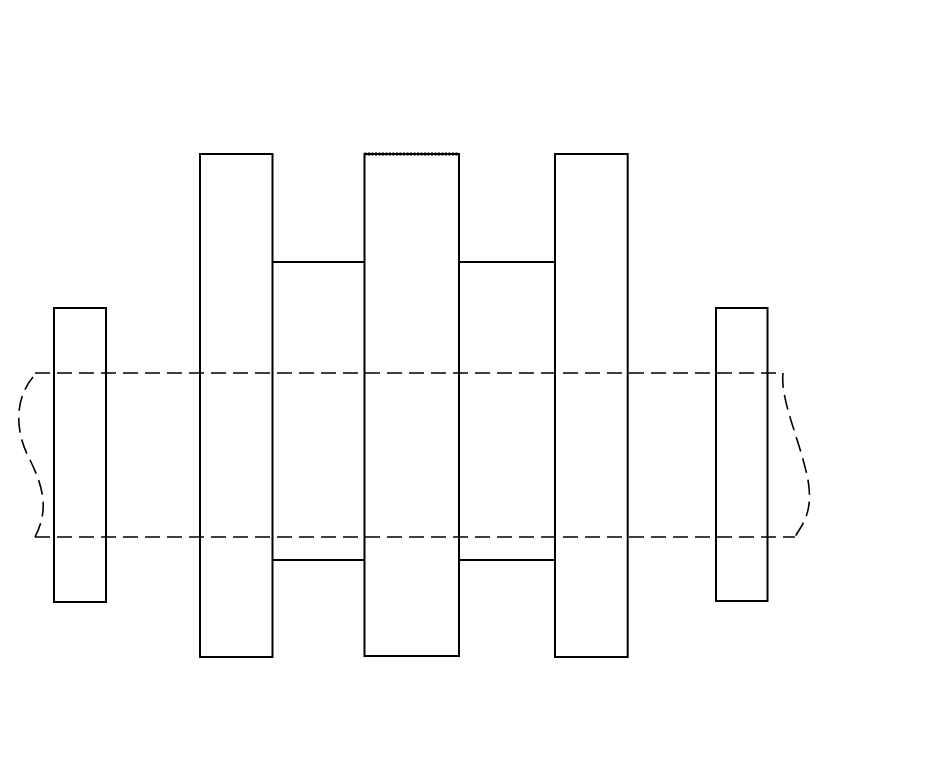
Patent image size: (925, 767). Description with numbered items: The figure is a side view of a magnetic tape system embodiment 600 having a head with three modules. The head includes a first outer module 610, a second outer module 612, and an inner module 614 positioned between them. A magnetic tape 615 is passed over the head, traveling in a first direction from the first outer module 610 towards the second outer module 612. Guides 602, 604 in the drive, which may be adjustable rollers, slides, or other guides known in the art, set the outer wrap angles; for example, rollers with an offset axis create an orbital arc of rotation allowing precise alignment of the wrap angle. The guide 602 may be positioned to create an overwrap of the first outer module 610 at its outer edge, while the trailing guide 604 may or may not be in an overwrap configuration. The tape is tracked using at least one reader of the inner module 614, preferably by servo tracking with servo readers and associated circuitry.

The embodiment 600 is at (120, 116).
The guide 602 is at (97, 602).
The trailing guide 604 is at (734, 601).
The first outer module 610 is at (200, 255).
The second outer module 612 is at (555, 208).
The inner module 614 is at (364, 208).
The magnetic tape 615 is at (783, 371).